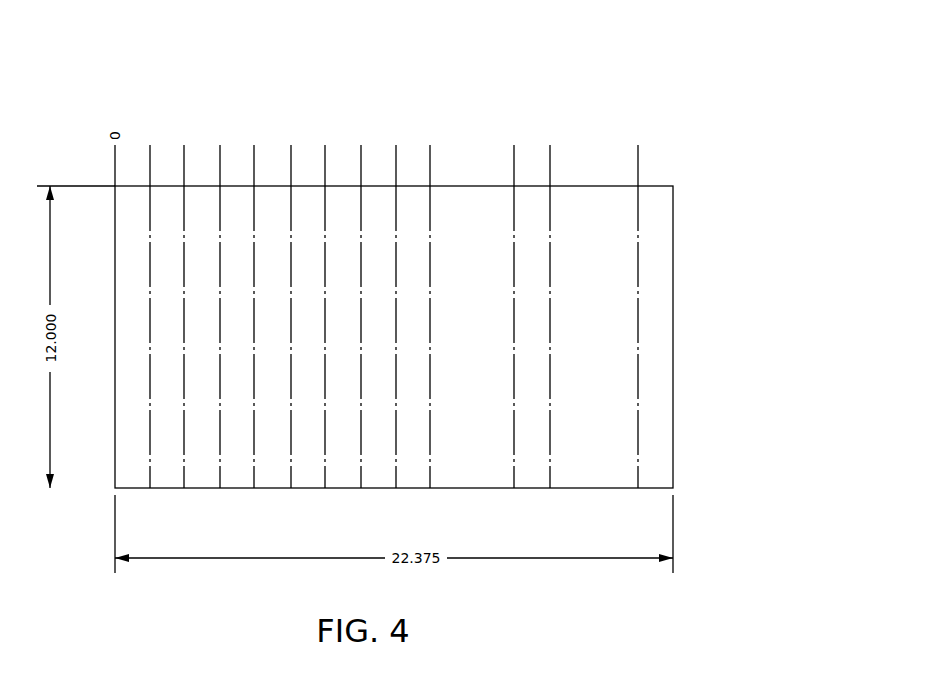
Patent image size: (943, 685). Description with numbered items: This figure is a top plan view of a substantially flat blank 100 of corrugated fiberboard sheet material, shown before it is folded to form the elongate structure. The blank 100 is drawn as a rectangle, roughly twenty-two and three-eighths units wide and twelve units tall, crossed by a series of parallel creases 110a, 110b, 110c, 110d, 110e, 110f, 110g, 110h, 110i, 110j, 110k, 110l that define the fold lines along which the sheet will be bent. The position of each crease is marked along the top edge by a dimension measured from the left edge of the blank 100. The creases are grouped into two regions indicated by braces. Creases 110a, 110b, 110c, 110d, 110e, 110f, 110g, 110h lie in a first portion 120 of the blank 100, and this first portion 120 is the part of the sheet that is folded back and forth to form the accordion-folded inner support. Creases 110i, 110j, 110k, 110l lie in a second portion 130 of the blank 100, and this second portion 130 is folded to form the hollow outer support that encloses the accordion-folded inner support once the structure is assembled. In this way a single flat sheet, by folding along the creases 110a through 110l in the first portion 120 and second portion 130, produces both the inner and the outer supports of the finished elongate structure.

The blank 100 is at (789, 333).
The crease 110a is at (149, 464).
The crease 110b is at (183, 464).
The crease 110c is at (219, 464).
The crease 110d is at (253, 464).
The crease 110e is at (290, 464).
The crease 110f is at (324, 464).
The crease 110g is at (360, 464).
The crease 110h is at (395, 464).
The crease 110i is at (429, 464).
The crease 110j is at (513, 464).
The crease 110k is at (549, 464).
The crease 110l is at (637, 464).
The first portion 120 is at (111, 102).
The second portion 130 is at (685, 90).